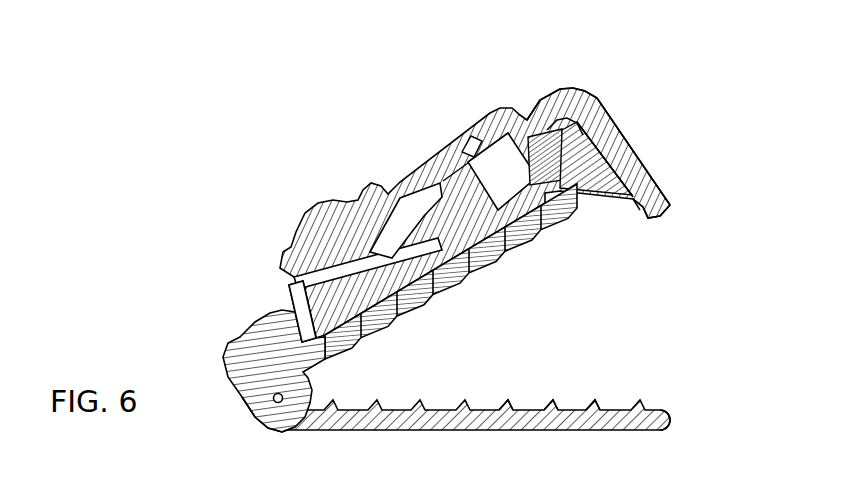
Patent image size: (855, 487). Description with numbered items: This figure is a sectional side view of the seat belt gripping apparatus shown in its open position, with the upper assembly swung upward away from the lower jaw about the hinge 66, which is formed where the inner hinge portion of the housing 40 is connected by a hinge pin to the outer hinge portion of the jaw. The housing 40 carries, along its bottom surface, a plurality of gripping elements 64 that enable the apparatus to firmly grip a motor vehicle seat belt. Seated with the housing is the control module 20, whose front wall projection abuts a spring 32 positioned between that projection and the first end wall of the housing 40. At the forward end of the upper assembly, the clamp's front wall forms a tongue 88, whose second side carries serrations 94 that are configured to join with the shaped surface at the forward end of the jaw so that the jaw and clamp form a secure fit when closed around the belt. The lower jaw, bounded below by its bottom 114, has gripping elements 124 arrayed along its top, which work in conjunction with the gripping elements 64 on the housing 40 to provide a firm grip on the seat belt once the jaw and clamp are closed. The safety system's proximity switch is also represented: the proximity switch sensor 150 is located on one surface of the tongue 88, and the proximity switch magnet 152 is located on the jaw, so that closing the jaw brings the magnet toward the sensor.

The control module 20 is at (488, 117).
The spring 32 is at (540, 133).
The housing 40 is at (240, 338).
The gripping elements 64 is at (588, 170).
The hinge 66 is at (262, 418).
The tongue 88 is at (613, 163).
The serrations 94 is at (647, 218).
The bottom 114 is at (433, 431).
The gripping elements 124 is at (598, 407).
The proximity switch sensor 150 is at (634, 200).
The proximity switch magnet 152 is at (657, 430).